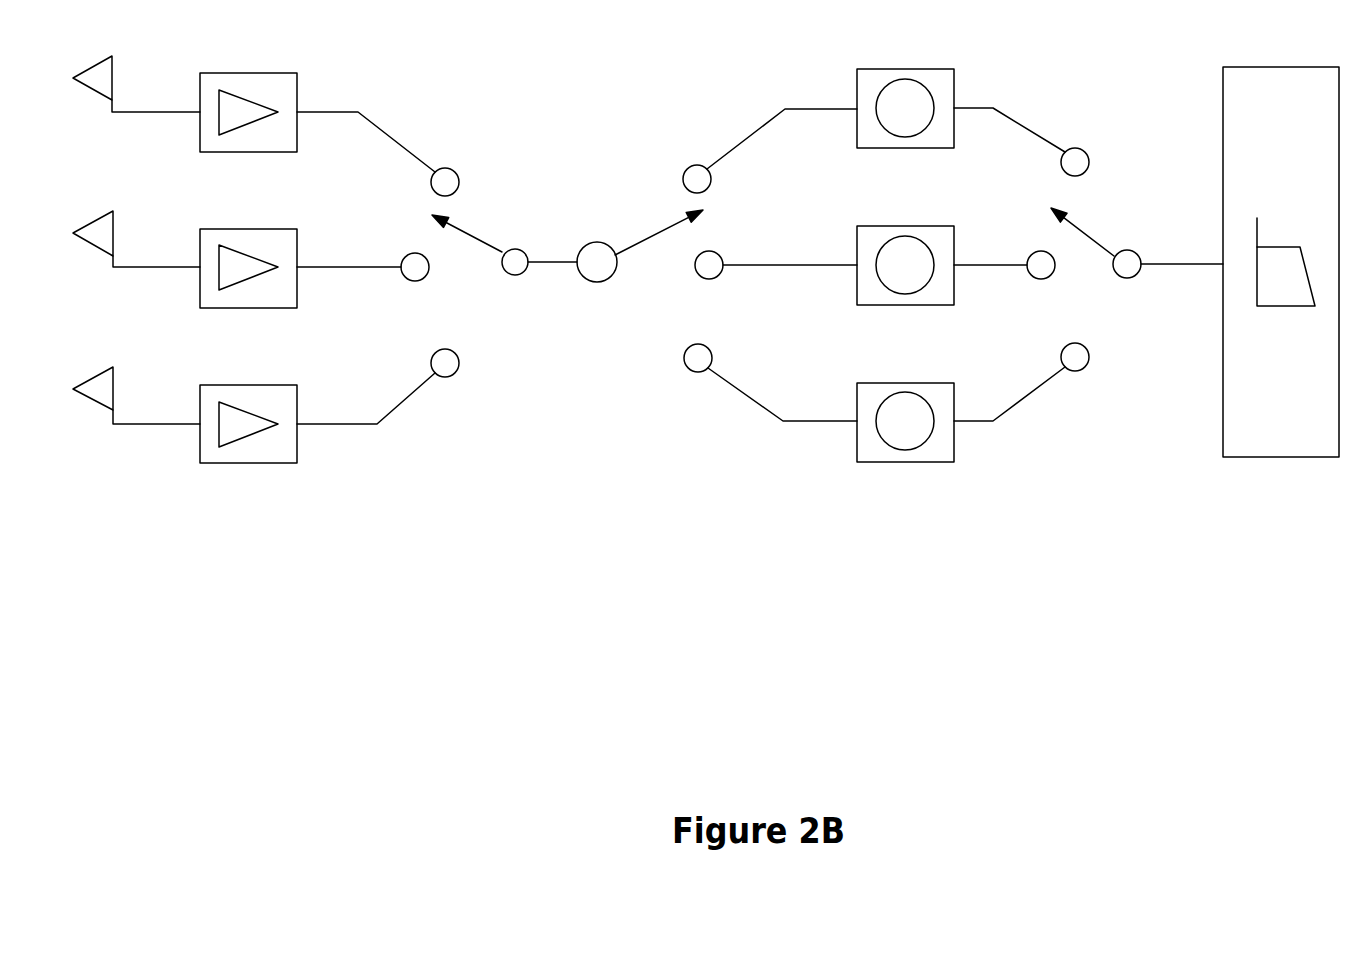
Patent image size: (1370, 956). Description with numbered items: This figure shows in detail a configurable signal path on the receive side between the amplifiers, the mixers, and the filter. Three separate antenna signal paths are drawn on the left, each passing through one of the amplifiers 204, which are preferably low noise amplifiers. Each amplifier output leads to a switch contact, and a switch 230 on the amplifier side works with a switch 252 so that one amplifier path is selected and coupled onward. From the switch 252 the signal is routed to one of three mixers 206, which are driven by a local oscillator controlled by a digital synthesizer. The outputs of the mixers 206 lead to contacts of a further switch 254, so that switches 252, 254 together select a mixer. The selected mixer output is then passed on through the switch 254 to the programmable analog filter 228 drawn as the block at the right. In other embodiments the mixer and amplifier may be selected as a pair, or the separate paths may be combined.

The amplifiers 204 is at (250, 463).
The mixers 206 is at (907, 462).
The programmable analog filter 228 is at (1282, 457).
The DAC 230 is at (519, 247).
The switch 252 is at (598, 281).
The switch 254 is at (1127, 278).